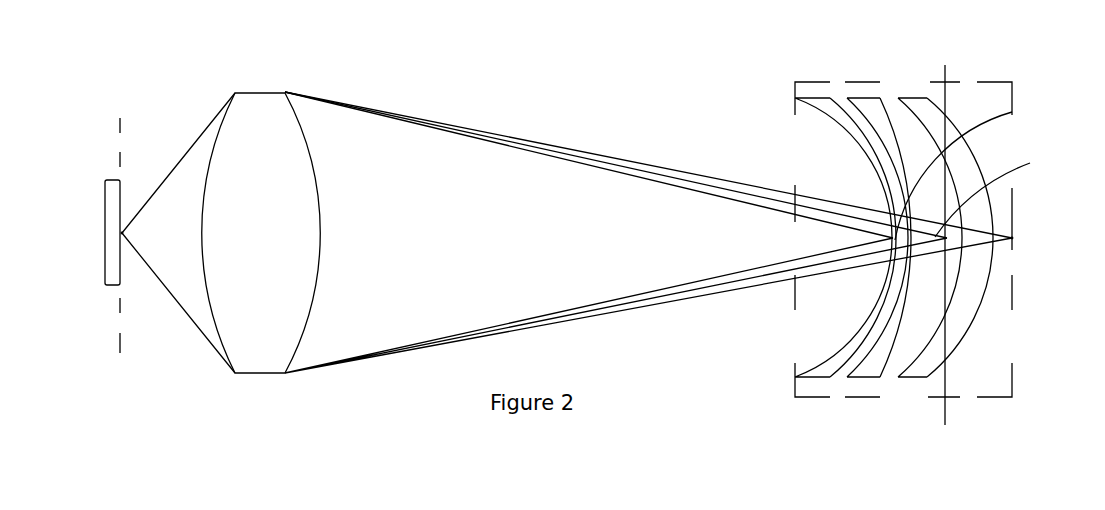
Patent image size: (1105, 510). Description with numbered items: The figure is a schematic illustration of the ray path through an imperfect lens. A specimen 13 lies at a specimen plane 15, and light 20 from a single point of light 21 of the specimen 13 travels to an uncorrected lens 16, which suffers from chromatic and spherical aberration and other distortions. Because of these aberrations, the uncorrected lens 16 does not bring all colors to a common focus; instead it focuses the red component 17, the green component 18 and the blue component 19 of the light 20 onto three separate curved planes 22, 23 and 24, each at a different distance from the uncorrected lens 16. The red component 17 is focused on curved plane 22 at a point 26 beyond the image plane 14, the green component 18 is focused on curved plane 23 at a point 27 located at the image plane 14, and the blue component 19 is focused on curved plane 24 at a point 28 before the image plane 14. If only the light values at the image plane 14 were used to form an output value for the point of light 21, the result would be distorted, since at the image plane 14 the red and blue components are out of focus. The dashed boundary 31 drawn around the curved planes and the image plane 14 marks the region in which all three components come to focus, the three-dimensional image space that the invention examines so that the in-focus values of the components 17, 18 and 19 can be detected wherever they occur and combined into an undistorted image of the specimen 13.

The specimen 13 is at (112, 197).
The image plane 14 is at (945, 383).
The specimen plane 15 is at (122, 165).
The uncorrected lens 16 is at (262, 105).
The red component 17 is at (616, 156).
The green component 18 is at (666, 172).
The blue component 19 is at (713, 190).
The light 20 is at (162, 287).
The point of light 21 is at (122, 233).
The curved plane 22 is at (913, 98).
The curved plane 23 is at (867, 98).
The curved plane 24 is at (817, 98).
The point 26 is at (1012, 240).
The point 27 is at (1030, 163).
The point 28 is at (1012, 112).
The housing 31 is at (985, 82).